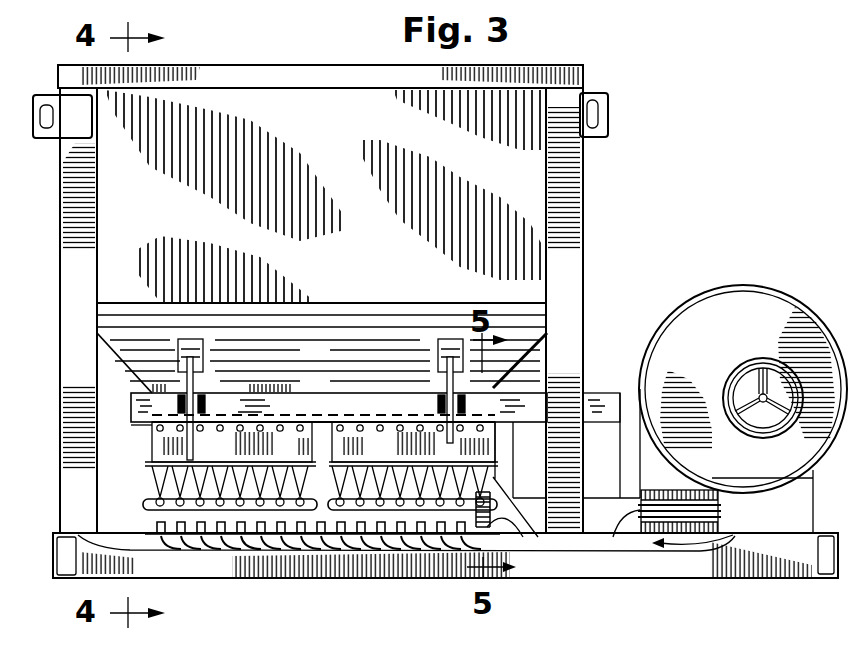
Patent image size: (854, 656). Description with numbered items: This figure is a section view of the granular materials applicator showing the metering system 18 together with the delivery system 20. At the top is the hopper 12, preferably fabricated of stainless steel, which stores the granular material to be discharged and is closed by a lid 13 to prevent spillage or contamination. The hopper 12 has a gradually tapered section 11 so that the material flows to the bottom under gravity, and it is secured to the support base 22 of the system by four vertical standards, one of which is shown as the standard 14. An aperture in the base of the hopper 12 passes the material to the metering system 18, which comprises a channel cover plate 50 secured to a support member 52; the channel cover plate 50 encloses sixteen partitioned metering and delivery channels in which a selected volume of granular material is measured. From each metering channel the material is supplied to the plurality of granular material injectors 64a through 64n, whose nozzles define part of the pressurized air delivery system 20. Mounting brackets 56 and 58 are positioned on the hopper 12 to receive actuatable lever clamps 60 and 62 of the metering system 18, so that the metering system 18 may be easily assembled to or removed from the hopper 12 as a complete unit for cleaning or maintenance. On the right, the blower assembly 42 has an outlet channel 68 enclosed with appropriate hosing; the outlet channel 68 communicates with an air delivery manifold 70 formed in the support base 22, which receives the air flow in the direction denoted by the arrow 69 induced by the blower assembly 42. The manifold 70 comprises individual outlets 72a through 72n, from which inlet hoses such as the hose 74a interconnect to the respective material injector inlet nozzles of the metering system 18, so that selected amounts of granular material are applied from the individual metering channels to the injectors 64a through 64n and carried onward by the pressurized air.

The tapered section 11 is at (523, 318).
The hopper 12 is at (507, 201).
The lid 13 is at (208, 64).
The standard 14 is at (585, 251).
The metering system 18 is at (135, 445).
The delivery system 20 is at (813, 288).
The support base 22 is at (745, 576).
The blower assembly 42 is at (755, 388).
The channel cover plate 50 is at (168, 447).
The support member 52 is at (131, 397).
The mounting bracket 56 is at (204, 350).
The mounting bracket 58 is at (437, 350).
The lever clamp 60 is at (152, 432).
The lever clamp 62 is at (493, 388).
The material injector 64n is at (165, 482).
The material injector 64a is at (492, 480).
The outlet channel 68 is at (637, 507).
The arrow 69 is at (681, 542).
The air delivery manifold 70 is at (392, 548).
The outlet 72n is at (152, 526).
The outlet 72a is at (470, 545).
The inlet hose 74a is at (490, 518).